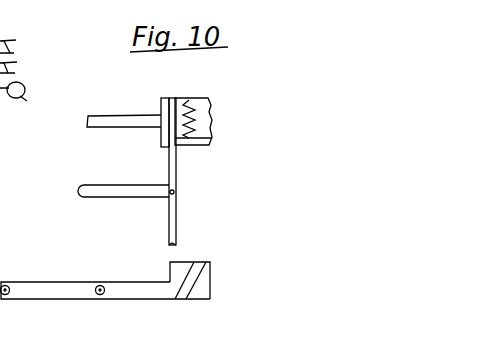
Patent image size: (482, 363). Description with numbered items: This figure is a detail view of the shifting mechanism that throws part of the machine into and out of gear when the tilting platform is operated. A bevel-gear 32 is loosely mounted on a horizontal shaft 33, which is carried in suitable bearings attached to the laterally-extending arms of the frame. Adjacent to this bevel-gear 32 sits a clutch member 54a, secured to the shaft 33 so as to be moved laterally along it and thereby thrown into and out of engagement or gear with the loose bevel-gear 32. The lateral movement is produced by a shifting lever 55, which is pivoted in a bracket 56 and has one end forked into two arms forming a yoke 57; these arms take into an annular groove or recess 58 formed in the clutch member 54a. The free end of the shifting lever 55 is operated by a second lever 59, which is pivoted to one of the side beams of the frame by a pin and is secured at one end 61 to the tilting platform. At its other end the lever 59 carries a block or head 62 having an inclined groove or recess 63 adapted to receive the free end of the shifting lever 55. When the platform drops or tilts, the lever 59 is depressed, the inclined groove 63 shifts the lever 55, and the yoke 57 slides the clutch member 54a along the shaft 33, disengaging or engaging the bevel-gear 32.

The bevel-gear 32 is at (213, 119).
The horizontal shaft 33 is at (124, 134).
The clutch member 54a is at (181, 99).
The shifting lever 55 is at (176, 170).
The bracket 56 is at (126, 180).
The yoke 57 is at (212, 138).
The annular groove 58 is at (165, 106).
The lever 59 is at (105, 278).
The end of lever 61 is at (17, 307).
The block or head 62 is at (210, 290).
The inclined groove 63 is at (185, 296).